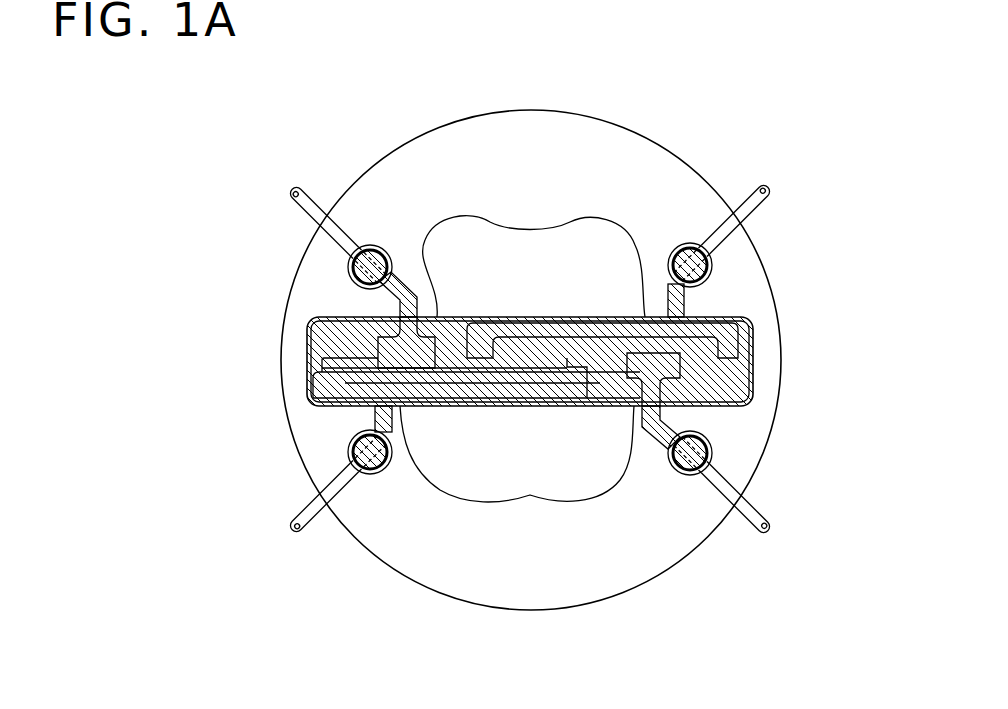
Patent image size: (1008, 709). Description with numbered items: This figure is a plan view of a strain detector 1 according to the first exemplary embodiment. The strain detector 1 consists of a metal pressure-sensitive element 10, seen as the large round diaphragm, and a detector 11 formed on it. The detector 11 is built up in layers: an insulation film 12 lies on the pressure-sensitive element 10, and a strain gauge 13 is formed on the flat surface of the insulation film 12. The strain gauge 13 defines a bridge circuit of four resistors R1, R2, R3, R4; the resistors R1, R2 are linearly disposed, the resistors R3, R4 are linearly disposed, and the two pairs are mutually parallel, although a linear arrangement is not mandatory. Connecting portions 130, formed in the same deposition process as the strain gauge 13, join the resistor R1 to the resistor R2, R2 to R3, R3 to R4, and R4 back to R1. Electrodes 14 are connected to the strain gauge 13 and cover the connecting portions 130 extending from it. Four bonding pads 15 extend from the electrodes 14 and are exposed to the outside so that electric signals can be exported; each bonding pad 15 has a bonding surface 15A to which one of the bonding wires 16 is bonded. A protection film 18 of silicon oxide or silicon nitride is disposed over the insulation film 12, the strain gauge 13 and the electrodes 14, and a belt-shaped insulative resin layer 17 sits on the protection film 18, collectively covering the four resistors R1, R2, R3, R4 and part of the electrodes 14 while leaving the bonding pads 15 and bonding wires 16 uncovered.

The strain detector 1 is at (700, 87).
The pressure-sensitive element 10 is at (508, 630).
The detector 11 is at (802, 412).
The insulation film 12 is at (443, 172).
The strain gauge 13 is at (496, 380).
The electrodes 14 is at (405, 292).
The bonding pads 15 is at (372, 244).
The bonding surface 15A is at (386, 254).
The bonding wires 16 is at (320, 195).
The insulative resin layer 17 is at (540, 372).
The protection film 18 is at (530, 497).
The connecting portions 130 is at (442, 337).
The resistor R1 is at (350, 345).
The resistor R2 is at (470, 345).
The resistor R3 is at (745, 382).
The resistor R4 is at (608, 372).